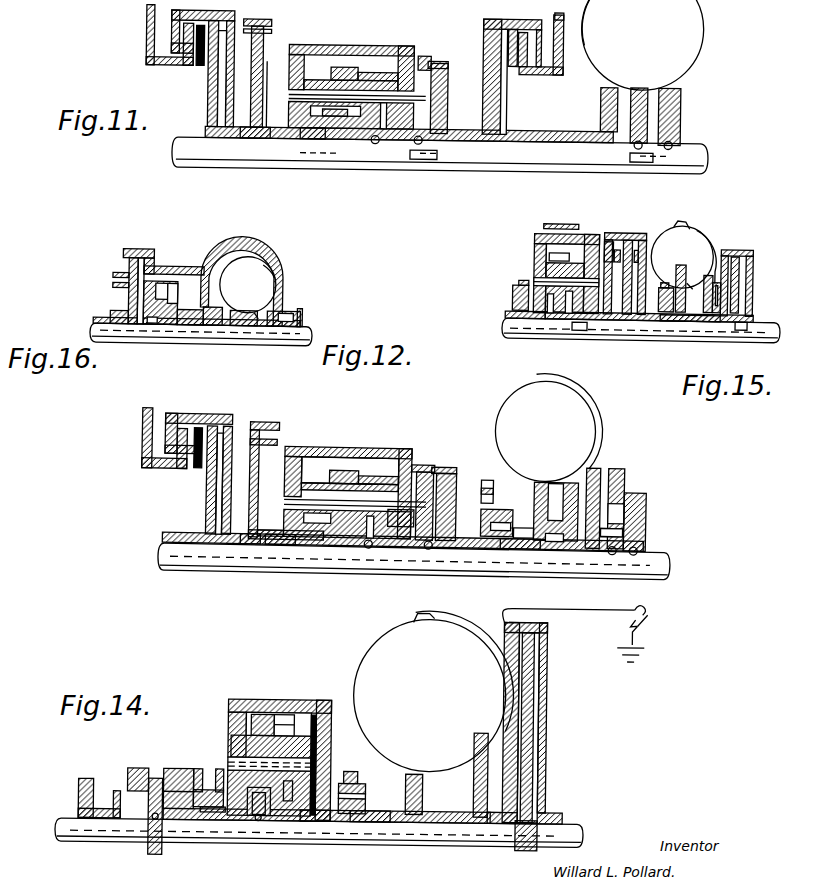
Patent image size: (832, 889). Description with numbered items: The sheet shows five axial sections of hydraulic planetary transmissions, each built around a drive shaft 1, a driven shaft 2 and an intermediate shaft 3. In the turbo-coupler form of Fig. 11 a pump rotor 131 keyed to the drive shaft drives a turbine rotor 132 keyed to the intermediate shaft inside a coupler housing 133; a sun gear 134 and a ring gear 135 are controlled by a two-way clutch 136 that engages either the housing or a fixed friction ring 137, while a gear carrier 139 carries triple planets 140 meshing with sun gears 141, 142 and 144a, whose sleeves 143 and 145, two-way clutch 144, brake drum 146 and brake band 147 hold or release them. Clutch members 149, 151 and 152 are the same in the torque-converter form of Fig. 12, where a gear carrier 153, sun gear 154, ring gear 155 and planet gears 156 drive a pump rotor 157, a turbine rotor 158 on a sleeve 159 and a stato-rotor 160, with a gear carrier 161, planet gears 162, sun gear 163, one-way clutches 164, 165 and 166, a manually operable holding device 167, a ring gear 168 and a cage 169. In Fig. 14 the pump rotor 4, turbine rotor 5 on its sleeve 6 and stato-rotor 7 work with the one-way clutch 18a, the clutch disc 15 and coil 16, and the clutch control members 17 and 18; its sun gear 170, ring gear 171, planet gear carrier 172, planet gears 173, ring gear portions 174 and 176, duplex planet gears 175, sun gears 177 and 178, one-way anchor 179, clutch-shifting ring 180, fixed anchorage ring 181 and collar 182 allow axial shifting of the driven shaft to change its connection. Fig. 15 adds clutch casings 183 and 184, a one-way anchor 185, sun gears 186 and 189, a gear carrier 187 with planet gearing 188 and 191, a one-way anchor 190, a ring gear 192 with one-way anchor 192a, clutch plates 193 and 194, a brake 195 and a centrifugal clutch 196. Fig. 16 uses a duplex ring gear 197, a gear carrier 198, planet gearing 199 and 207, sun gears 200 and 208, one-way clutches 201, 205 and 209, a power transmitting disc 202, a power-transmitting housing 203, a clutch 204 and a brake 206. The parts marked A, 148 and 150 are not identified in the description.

In FIG. 11, the drive shaft 1 is at (692, 152).
In FIG. 16, the drive shaft 1 is at (140, 343).
In FIG. 15, the drive shaft 1 is at (770, 336).
In FIG. 12, the drive shaft 1 is at (671, 567).
In FIG. 14, the drive shaft 1 is at (571, 822).
In FIG. 11, the driven shaft 2 is at (287, 160).
In FIG. 16, the driven shaft 2 is at (302, 343).
In FIG. 15, the driven shaft 2 is at (518, 339).
In FIG. 12, the driven shaft 2 is at (275, 563).
In FIG. 14, the driven shaft 2 is at (117, 832).
In FIG. 11, the intermediate shaft 3 is at (497, 162).
In FIG. 15, the intermediate shaft 3 is at (665, 334).
In FIG. 12, the intermediate shaft 3 is at (527, 569).
In FIG. 14, the intermediate shaft 3 is at (390, 836).
In FIG. 15, the pump rotor 4 is at (676, 229).
In FIG. 16, the turbine rotor 5 is at (220, 271).
In FIG. 15, the turbine rotor 5 is at (706, 230).
In FIG. 14, the turbine rotor 5 is at (458, 640).
In FIG. 14, the sleeve 6 is at (462, 810).
In FIG. 16, the stato-rotor 7 is at (255, 312).
In FIG. 15, the stato-rotor 7 is at (690, 280).
In FIG. 14, the stato-rotor 7 is at (440, 767).
In FIG. 15, the clutch disc 15 is at (746, 268).
In FIG. 14, the clutch disc 15 is at (531, 692).
In FIG. 14, the coil 16 is at (500, 640).
In FIG. 14, the clutch control member 17 is at (650, 617).
In FIG. 14, the contact 18 is at (651, 603).
In FIG. 14, the one-way clutch 18a is at (528, 805).
In FIG. 16, the ball projection A is at (266, 265).
In FIG. 14, the ball projection A is at (380, 627).
In FIG. 11, the pump rotor 131 is at (703, 22).
In FIG. 11, the turbine rotor 132 is at (592, 21).
In FIG. 11, the coupler housing 133 is at (388, 67).
In FIG. 11, the sun gear 134 is at (414, 142).
In FIG. 11, the ring gear 135 is at (430, 62).
In FIG. 11, the two-way clutch 136 is at (517, 13).
In FIG. 11, the fixed friction ring 137 is at (554, 71).
In FIG. 11, the gear carrier 139 is at (373, 44).
In FIG. 11, the triple planets 140 is at (343, 66).
In FIG. 12, the triple planets 140 is at (337, 517).
In FIG. 11, the sun gear 141 is at (386, 143).
In FIG. 12, the sun gear 141 is at (383, 541).
In FIG. 11, the sun gear 142 is at (348, 131).
In FIG. 12, the sun gear 142 is at (340, 543).
In FIG. 11, the sleeve 143 is at (255, 134).
In FIG. 12, the sleeve 143 is at (277, 542).
In FIG. 11, the two-way clutch 144 is at (172, 14).
In FIG. 11, the sun gear 144a is at (316, 134).
In FIG. 12, the sun gear 144a is at (287, 523).
In FIG. 11, the sleeve 145 is at (266, 126).
In FIG. 12, the sleeve 145 is at (250, 544).
In FIG. 11, the brake drum 146 is at (220, 66).
In FIG. 12, the brake drum 146 is at (278, 436).
In FIG. 11, the brake band 147 is at (209, 60).
In FIG. 12, the brake band 147 is at (256, 421).
In FIG. 11, the lever 148 is at (508, 68).
In FIG. 11, the clutch member 149 is at (165, 62).
In FIG. 12, the clutch member 149 is at (193, 427).
In FIG. 11, the rod 150 is at (504, 95).
In FIG. 11, the clutch member 151 is at (145, 42).
In FIG. 12, the clutch member 151 is at (141, 426).
In FIG. 11, the clutch member 152 is at (216, 90).
In FIG. 12, the clutch member 152 is at (205, 493).
In FIG. 12, the gear carrier 153 is at (645, 503).
In FIG. 12, the sun gear 154 is at (620, 551).
In FIG. 12, the ring gear 155 is at (597, 470).
In FIG. 12, the planet gears 156 is at (622, 485).
In FIG. 12, the pump rotor 157 is at (512, 402).
In FIG. 12, the turbine rotor 158 is at (594, 420).
In FIG. 12, the sleeve 159 is at (543, 548).
In FIG. 12, the stato-rotor 160 is at (528, 490).
In FIG. 12, the gear carrier 161 is at (438, 466).
In FIG. 12, the planet gears 162 is at (480, 480).
In FIG. 12, the sun gear 163 is at (440, 533).
In FIG. 12, the one-way clutch 164 is at (497, 512).
In FIG. 12, the one-way clutch 165 is at (520, 531).
In FIG. 12, the one-way clutch 166 is at (603, 530).
In FIG. 12, the manually operable holding device 167 is at (485, 480).
In FIG. 12, the ring gear 168 is at (422, 463).
In FIG. 12, the cage 169 is at (327, 445).
In FIG. 14, the sun gear 170 is at (315, 808).
In FIG. 14, the ring gear 171 is at (280, 712).
In FIG. 14, the planet gear carrier 172 is at (318, 748).
In FIG. 14, the planet gears 173 is at (312, 712).
In FIG. 14, the ring gear portion 174 is at (262, 712).
In FIG. 14, the duplex planet gears 175 is at (228, 741).
In FIG. 14, the ring gear portion 176 is at (227, 700).
In FIG. 14, the sun gear 177 is at (222, 808).
In FIG. 14, the sun gear 178 is at (260, 818).
In FIG. 14, the one-way anchor 179 is at (180, 767).
In FIG. 14, the clutch-shifting ring 180 is at (130, 768).
In FIG. 14, the fixed anchorage ring 181 is at (80, 779).
In FIG. 14, the collar 182 is at (146, 808).
In FIG. 15, the clutch casing 183 is at (742, 248).
In FIG. 15, the clutch casing 184 is at (628, 232).
In FIG. 15, the one-way anchor 185 is at (668, 306).
In FIG. 15, the sun gear 186 is at (583, 312).
In FIG. 15, the gear carrier 187 is at (536, 281).
In FIG. 15, the planet gearing 188 is at (551, 315).
In FIG. 15, the sun gear 189 is at (535, 312).
In FIG. 15, the one-way anchor 190 is at (512, 298).
In FIG. 15, the planet gearing 191 is at (547, 268).
In FIG. 15, the ring gear 192 is at (540, 236).
In FIG. 15, the one-way anchor 192a is at (612, 314).
In FIG. 15, the clutch plate 193 is at (624, 244).
In FIG. 15, the clutch plate 194 is at (601, 233).
In FIG. 15, the brake 195 is at (550, 222).
In FIG. 16, the centrifugal clutch 196 is at (301, 308).
In FIG. 15, the centrifugal clutch 196 is at (728, 294).
In FIG. 16, the duplex ring gear 197 is at (190, 266).
In FIG. 16, the gear carrier 198 is at (178, 328).
In FIG. 16, the planet gearing 199 is at (146, 291).
In FIG. 16, the sun gear 200 is at (150, 324).
In FIG. 16, the one-way clutch 201 is at (112, 316).
In FIG. 16, the power transmitting disc 202 is at (112, 284).
In FIG. 16, the power-transmitting housing 203 is at (231, 239).
In FIG. 16, the clutch 204 is at (140, 250).
In FIG. 16, the one-way clutch 205 is at (283, 305).
In FIG. 16, the brake 206 is at (120, 270).
In FIG. 16, the planet gearing 207 is at (180, 292).
In FIG. 16, the sun gear 208 is at (197, 328).
In FIG. 16, the one-way clutch 209 is at (208, 330).